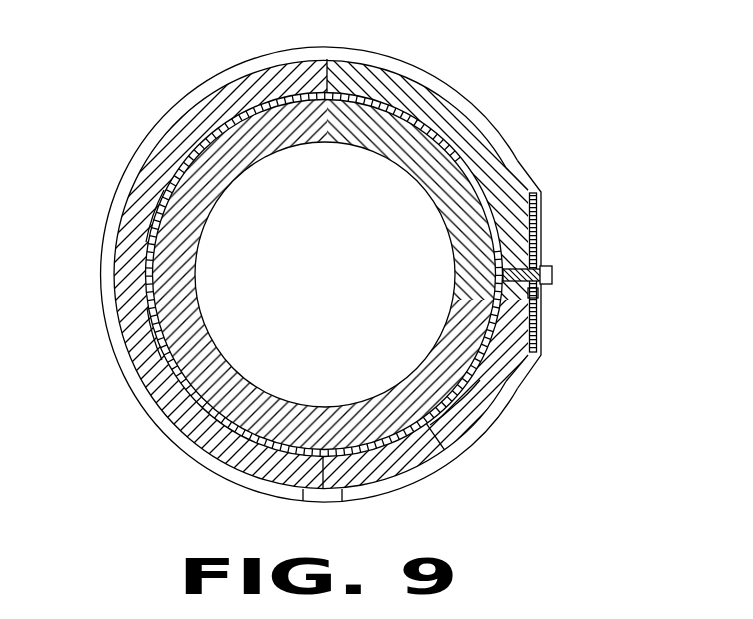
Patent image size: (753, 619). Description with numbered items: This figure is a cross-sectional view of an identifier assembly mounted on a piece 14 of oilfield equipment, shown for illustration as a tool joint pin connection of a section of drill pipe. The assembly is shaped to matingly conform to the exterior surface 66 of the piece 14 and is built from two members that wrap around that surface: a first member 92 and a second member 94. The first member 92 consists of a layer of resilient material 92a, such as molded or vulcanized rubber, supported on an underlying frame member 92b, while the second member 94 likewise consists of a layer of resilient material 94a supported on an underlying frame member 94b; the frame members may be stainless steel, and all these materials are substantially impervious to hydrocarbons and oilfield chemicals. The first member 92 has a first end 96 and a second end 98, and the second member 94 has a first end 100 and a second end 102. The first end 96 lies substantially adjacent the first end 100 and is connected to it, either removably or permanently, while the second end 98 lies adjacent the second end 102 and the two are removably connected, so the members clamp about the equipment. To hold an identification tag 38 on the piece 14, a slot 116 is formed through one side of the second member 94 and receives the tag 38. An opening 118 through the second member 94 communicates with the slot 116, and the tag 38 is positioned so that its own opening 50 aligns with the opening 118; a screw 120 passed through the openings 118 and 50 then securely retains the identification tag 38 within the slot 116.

The piece of oilfield equipment 14 is at (257, 108).
The first end of the first member 96 is at (317, 60).
The first end of the second member 100 is at (343, 60).
The second member 94 is at (462, 100).
The first member 92 is at (132, 183).
The frame member 92b is at (145, 287).
The layer of resilient material 92a is at (135, 341).
The slot 116 is at (546, 213).
The opening 50 is at (546, 267).
The screw 120 is at (552, 275).
The opening 118 is at (544, 299).
The identification tag 38 is at (543, 318).
The frame member 94b is at (482, 380).
The layer of resilient material 94a is at (467, 420).
The exterior surface 66 is at (421, 425).
The second end of the first member 98 is at (305, 498).
The second end of the second member 102 is at (340, 498).